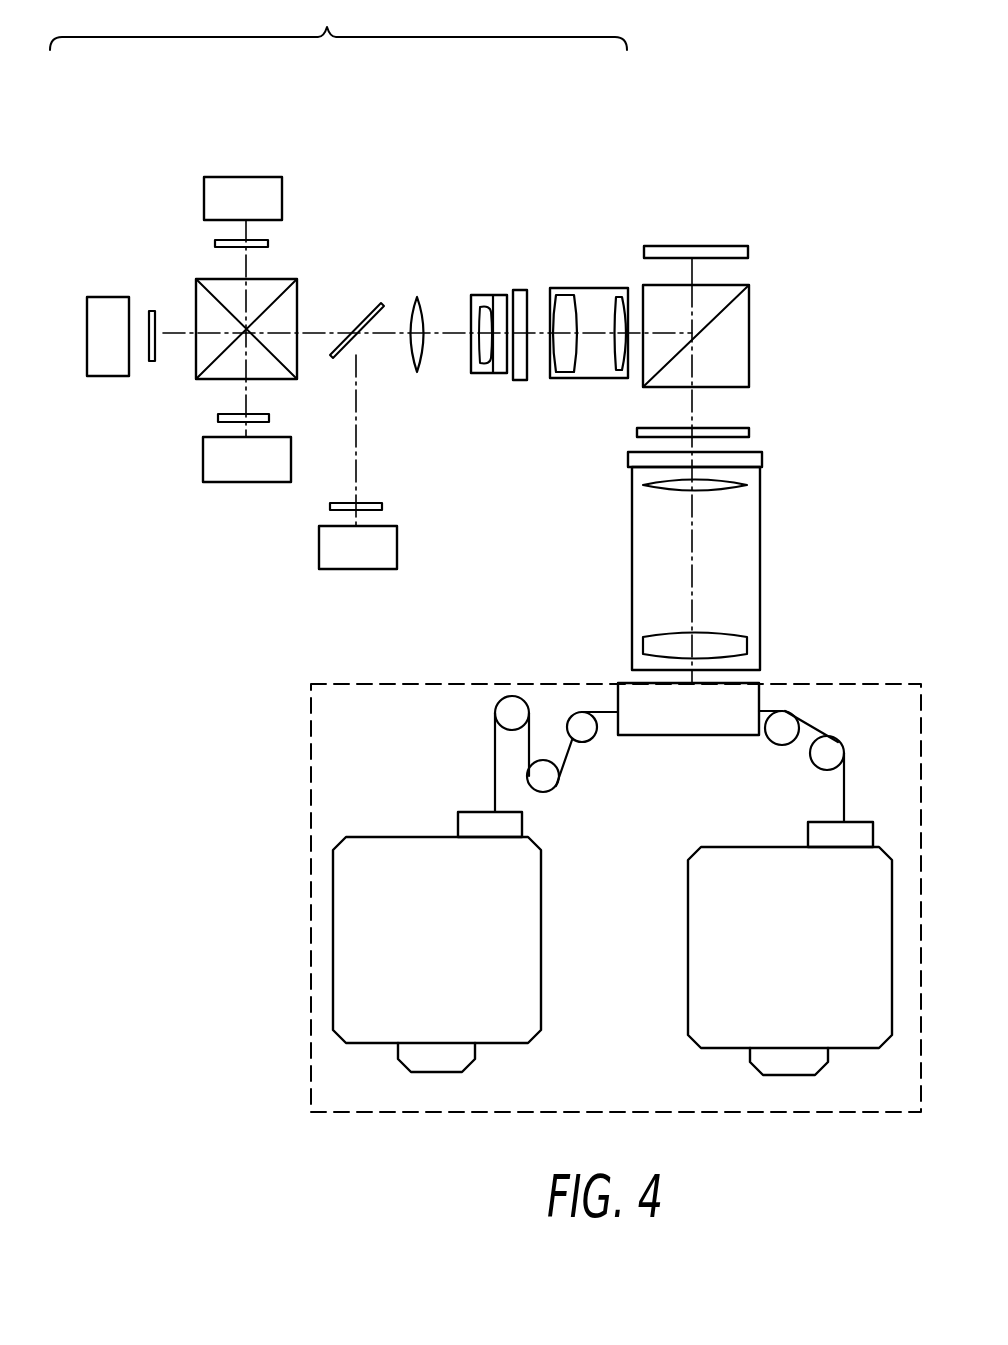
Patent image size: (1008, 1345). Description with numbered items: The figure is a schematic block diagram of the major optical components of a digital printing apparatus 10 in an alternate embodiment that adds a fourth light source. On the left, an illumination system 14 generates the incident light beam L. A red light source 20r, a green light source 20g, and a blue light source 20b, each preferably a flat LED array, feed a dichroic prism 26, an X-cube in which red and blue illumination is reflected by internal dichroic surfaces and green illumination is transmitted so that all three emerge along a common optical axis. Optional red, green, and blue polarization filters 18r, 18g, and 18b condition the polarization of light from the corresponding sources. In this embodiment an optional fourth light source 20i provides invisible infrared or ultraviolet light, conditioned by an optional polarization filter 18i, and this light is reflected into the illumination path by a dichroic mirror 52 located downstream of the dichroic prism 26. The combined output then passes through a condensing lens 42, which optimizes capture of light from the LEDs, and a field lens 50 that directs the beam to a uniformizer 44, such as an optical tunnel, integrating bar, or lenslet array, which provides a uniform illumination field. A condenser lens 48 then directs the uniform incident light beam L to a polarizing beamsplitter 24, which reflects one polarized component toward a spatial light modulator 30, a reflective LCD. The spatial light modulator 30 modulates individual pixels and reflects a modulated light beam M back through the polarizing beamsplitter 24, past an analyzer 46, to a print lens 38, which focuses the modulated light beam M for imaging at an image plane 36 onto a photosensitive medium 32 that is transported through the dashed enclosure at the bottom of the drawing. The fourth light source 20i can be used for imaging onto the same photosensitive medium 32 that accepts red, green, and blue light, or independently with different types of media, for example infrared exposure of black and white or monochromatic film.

The printing apparatus 10 is at (795, 172).
The illumination system 14 is at (338, 25).
The blue polarization filter 18b is at (262, 239).
The green polarization filter 18g is at (150, 310).
The polarization filter 18i is at (365, 502).
The red polarization filter 18r is at (218, 417).
The blue light source 20b is at (248, 175).
The green light source 20g is at (97, 377).
The fourth light source 20i is at (398, 548).
The red light source 20r is at (203, 468).
The polarizing beamsplitter 24 is at (750, 315).
The dichroic prism 26 is at (203, 280).
The spatial light modulator 30 is at (722, 245).
The photosensitive medium 32 is at (495, 745).
The image plane 36 is at (700, 682).
The print lens 38 is at (760, 517).
The condensing lens 42 is at (413, 305).
The uniformizer 44 is at (518, 290).
The analyzer 46 is at (637, 433).
The condenser lens 48 is at (593, 288).
The field lens 50 is at (480, 373).
The dichroic mirror 52 is at (363, 320).
The incident light beam L is at (635, 350).
The modulated light beam M is at (693, 410).